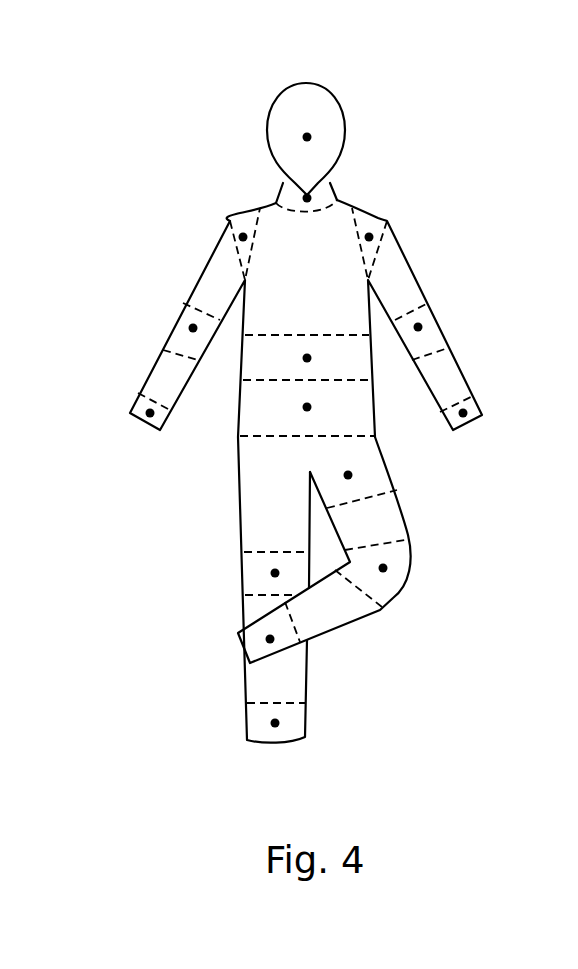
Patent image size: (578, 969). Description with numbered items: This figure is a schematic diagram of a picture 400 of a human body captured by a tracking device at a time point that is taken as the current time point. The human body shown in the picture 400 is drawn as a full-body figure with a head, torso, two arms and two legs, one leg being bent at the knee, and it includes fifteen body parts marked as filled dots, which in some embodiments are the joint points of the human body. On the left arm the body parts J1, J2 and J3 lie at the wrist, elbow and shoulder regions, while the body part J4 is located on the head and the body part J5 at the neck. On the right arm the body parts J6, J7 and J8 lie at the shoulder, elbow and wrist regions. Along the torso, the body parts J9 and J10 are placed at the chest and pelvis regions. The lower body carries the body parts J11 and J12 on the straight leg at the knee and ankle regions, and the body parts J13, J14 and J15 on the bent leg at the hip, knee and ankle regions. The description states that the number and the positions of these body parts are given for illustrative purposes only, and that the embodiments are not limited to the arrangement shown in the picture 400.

The picture 400 is at (88, 66).
The body part J1 is at (150, 413).
The body part J2 is at (193, 328).
The body part J3 is at (243, 237).
The body part J4 is at (307, 137).
The body part J5 is at (307, 198).
The body part J6 is at (369, 237).
The body part J7 is at (418, 327).
The body part J8 is at (463, 413).
The body part J9 is at (307, 358).
The body part J10 is at (307, 407).
The body part J11 is at (275, 573).
The body part J12 is at (275, 723).
The body part J13 is at (348, 475).
The body part J14 is at (383, 568).
The body part J15 is at (270, 639).